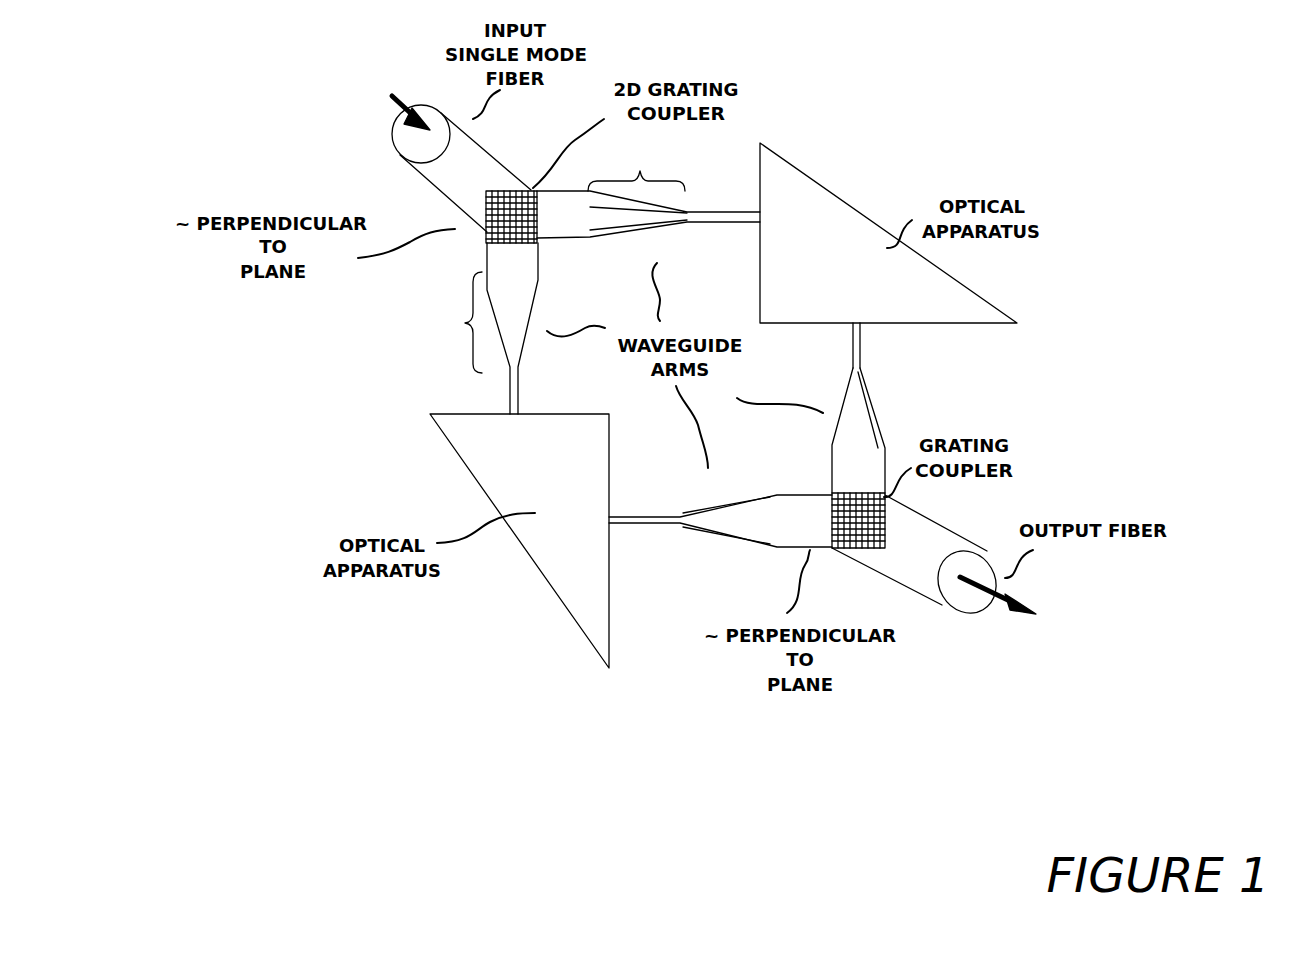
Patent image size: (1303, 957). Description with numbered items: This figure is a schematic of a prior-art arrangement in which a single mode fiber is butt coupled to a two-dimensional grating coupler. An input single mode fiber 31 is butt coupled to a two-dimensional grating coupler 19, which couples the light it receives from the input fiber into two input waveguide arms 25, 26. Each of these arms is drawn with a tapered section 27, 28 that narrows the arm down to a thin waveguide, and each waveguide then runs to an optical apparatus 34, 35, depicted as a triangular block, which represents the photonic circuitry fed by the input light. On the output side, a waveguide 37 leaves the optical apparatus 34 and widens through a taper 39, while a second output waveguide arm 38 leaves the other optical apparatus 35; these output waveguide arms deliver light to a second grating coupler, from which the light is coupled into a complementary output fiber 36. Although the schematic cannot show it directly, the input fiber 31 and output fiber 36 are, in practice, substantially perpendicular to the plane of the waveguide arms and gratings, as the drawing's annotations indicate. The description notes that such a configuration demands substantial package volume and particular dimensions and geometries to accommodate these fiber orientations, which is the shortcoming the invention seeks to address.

The 2D grating coupler 19 is at (537, 236).
The waveguide arm 25 is at (648, 214).
The waveguide arm 26 is at (512, 328).
The taper section of waveguide arm 27 is at (636, 166).
The taper section of waveguide arm 28 is at (446, 322).
The input single mode fiber 31 is at (461, 164).
The optical apparatus 34 is at (888, 233).
The optical apparatus 35 is at (519, 541).
The output fiber 36 is at (934, 559).
The waveguide 37 is at (833, 493).
The waveguide arm / grating coupler 38 is at (747, 520).
The waveguide taper 39 is at (858, 430).